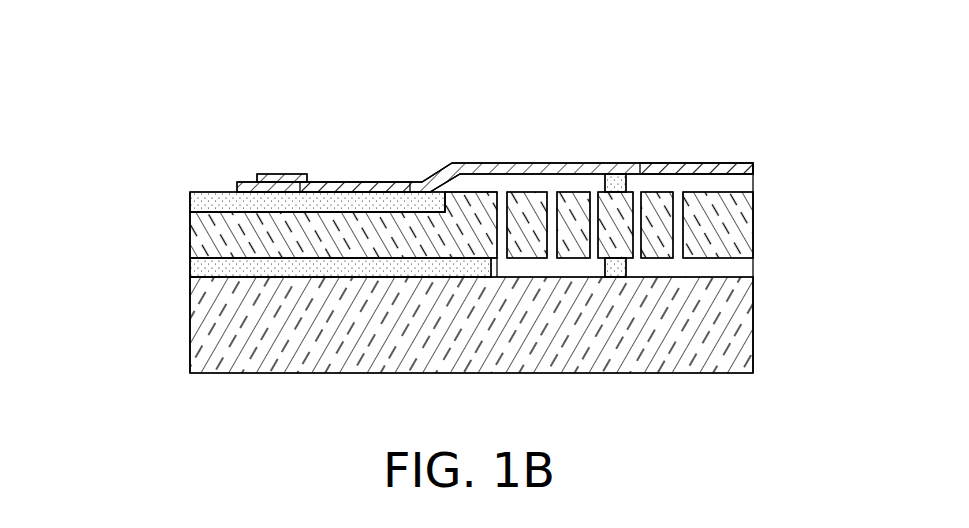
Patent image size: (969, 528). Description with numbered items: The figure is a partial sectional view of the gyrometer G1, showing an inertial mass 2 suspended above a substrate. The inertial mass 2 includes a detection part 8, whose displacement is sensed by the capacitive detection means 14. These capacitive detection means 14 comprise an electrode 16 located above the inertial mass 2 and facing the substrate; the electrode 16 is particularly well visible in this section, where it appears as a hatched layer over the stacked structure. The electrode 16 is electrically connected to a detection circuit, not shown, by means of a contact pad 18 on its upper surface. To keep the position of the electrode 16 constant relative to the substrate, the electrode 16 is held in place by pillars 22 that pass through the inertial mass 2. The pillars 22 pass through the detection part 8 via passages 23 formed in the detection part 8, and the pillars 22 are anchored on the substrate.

The inertial mass 2 is at (676, 266).
The detection part 8 is at (671, 230).
The capacitive means of detecting displacement 14 is at (729, 151).
The electrode 16 is at (609, 151).
The contact pad 18 is at (278, 173).
The pillars 22 is at (600, 205).
The passages 23 is at (637, 210).
The gyrometer G1 is at (396, 164).